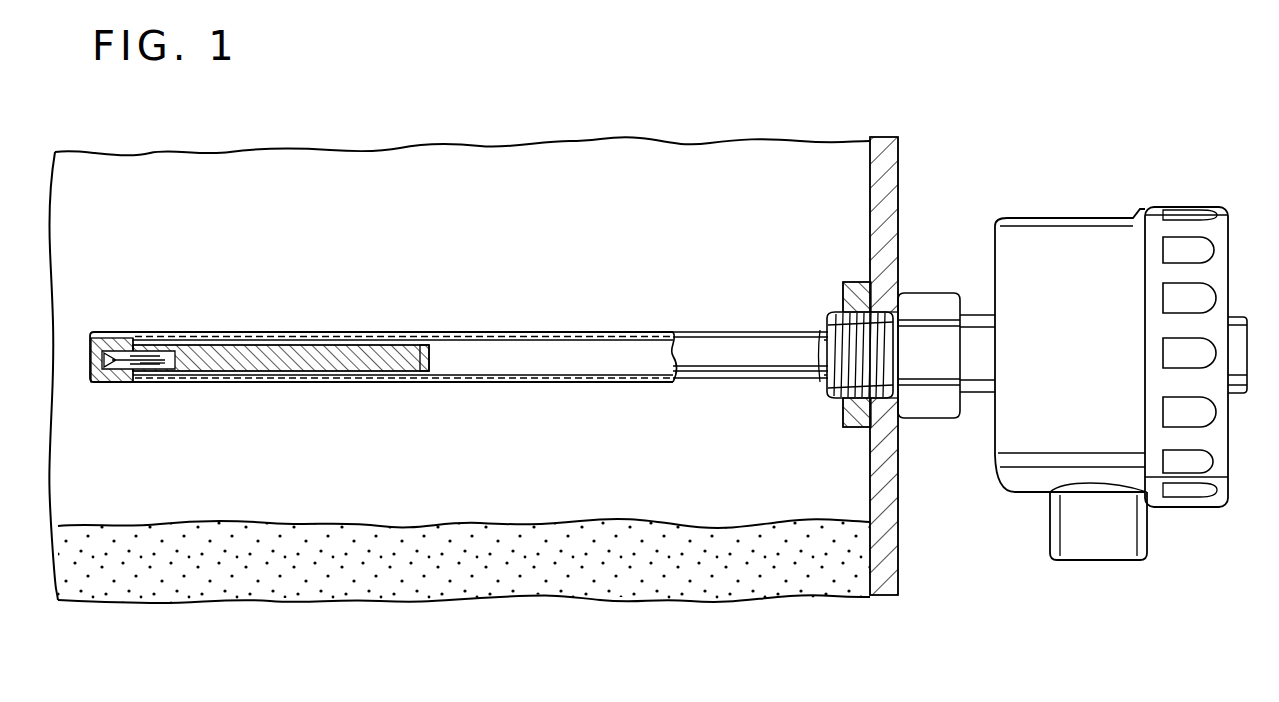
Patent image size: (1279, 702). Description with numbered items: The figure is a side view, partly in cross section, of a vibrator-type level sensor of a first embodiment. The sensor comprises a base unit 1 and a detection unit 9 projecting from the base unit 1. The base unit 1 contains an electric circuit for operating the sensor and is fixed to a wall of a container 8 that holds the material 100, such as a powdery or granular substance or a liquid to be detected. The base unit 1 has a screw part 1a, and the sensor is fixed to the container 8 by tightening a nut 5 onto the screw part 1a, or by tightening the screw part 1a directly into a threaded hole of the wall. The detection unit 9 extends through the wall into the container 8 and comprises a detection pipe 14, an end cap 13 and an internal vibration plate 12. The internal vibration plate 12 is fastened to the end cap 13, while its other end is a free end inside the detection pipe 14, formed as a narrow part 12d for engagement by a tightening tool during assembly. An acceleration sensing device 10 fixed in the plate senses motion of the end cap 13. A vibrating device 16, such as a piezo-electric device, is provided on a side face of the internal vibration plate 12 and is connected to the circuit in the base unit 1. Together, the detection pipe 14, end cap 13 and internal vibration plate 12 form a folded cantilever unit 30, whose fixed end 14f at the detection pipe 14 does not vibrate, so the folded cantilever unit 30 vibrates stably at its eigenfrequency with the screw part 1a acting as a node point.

The base unit 1 is at (1078, 228).
The screw part 1a is at (827, 386).
The nut 5 is at (858, 282).
The container 8 is at (885, 173).
The detection unit 9 is at (727, 331).
The acceleration sensing device 10 is at (112, 340).
The internal vibration plate 12 is at (199, 375).
The narrow part 12d is at (418, 350).
The end cap 13 is at (113, 383).
The detection pipe 14 is at (489, 333).
The fixed end 14f is at (825, 328).
The vibrating device 16 is at (252, 386).
The folded cantilever unit 30 is at (381, 327).
The material 100 is at (757, 572).